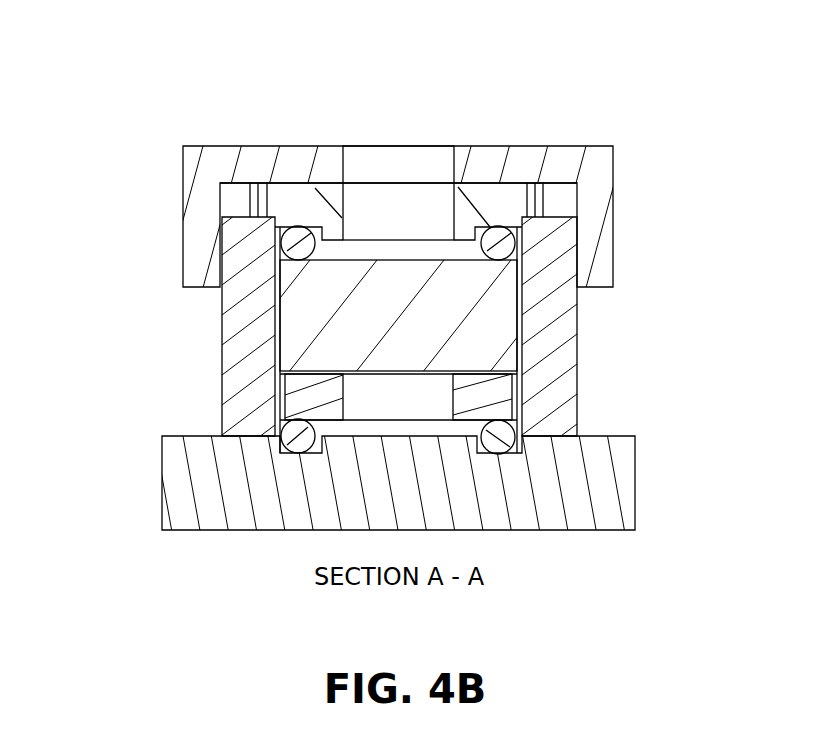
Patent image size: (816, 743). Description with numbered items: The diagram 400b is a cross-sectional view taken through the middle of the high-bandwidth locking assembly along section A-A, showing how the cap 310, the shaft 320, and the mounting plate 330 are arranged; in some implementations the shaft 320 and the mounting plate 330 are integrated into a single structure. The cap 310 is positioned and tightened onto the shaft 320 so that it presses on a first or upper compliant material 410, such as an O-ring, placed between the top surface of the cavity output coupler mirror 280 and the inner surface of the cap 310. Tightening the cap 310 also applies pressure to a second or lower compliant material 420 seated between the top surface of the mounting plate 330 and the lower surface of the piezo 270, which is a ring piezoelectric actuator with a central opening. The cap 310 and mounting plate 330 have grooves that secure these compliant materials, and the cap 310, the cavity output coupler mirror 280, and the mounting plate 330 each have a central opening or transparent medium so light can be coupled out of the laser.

The diagram 400b is at (636, 60).
The cap 310 is at (238, 142).
The shaft 320 is at (212, 351).
The mounting plate 330 is at (640, 492).
The cavity output coupler mirror 280 is at (470, 333).
The piezo 270 is at (497, 388).
The first compliant material 410 is at (505, 240).
The second compliant material 420 is at (291, 437).